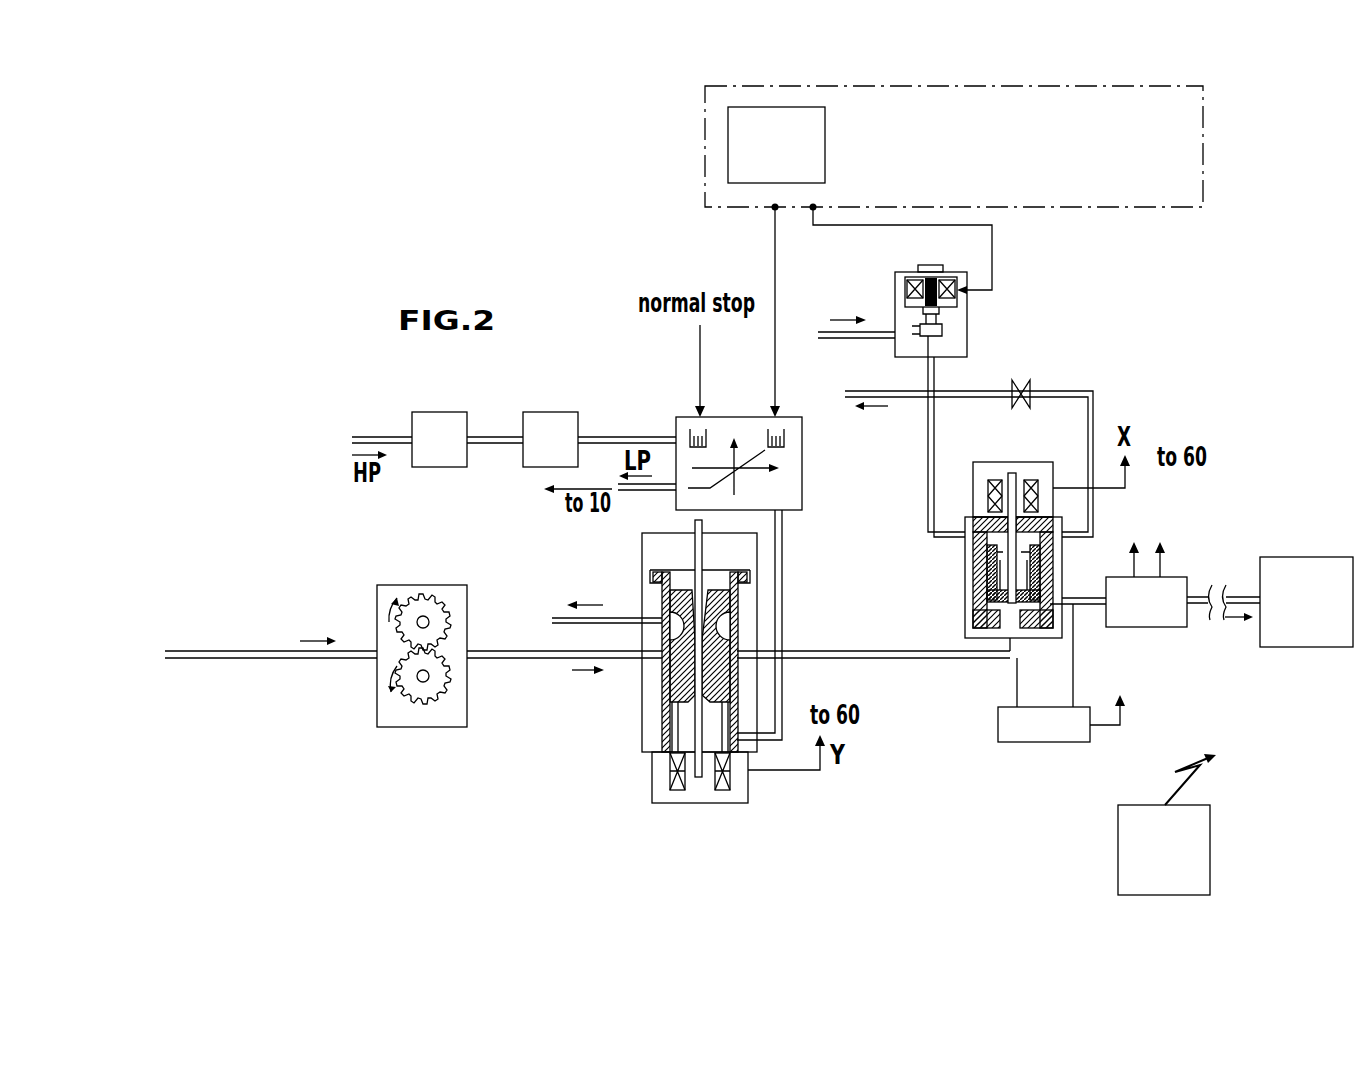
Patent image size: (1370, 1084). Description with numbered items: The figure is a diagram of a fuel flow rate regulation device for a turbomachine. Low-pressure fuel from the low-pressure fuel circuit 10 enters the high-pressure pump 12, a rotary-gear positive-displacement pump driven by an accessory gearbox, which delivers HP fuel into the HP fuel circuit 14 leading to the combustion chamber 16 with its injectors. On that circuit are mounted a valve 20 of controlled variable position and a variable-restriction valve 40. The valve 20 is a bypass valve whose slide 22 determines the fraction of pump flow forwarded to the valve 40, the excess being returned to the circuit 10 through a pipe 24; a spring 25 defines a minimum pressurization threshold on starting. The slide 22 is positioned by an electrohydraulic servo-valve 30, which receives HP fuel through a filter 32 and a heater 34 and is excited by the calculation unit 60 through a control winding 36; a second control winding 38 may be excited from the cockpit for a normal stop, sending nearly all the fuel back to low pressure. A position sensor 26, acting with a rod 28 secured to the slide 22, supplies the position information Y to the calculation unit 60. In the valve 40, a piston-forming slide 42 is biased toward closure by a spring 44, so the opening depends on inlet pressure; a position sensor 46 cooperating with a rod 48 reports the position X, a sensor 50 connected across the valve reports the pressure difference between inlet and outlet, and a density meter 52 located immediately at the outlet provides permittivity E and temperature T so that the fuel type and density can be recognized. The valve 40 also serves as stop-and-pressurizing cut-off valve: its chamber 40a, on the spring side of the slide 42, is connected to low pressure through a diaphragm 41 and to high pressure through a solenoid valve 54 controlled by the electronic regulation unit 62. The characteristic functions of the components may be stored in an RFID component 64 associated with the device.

The low-pressure fuel circuit 10 is at (312, 658).
The high-pressure pump 12 is at (420, 722).
The HP fuel circuit 14 is at (893, 676).
The combustion chamber 16 is at (1318, 614).
The valve of controlled variable position 20 is at (676, 661).
The slide 22 is at (740, 628).
The pipe 24 is at (552, 618).
The spring 25 is at (735, 688).
The position sensor 26 is at (670, 790).
The rod 28 is at (695, 706).
The electrohydraulic servo-valve 30 is at (747, 456).
The filter 32 is at (452, 452).
The heater 34 is at (563, 452).
The control winding 36 is at (786, 436).
The control winding 38 is at (690, 437).
The variable-restriction valve 40 is at (1001, 555).
The chamber 40a is at (1045, 560).
The diaphragm 41 is at (1021, 382).
The slide 42 is at (1000, 604).
The spring 44 is at (995, 578).
The position sensor 46 is at (978, 490).
The rod 48 is at (1003, 548).
The sensor 50 is at (1056, 737).
The density meter 52 is at (1159, 614).
The solenoid valve 54 is at (970, 318).
The calculation unit 60 is at (788, 154).
The electronic regulation unit 62 is at (1026, 154).
The RFID component 64 is at (1176, 867).